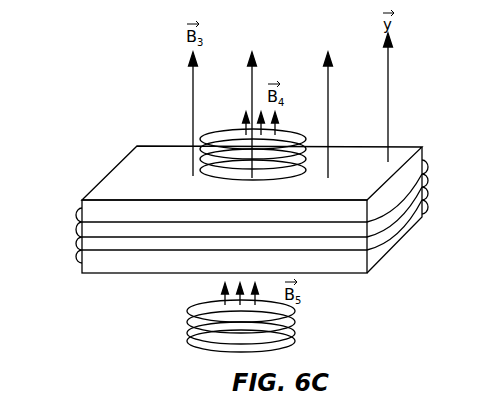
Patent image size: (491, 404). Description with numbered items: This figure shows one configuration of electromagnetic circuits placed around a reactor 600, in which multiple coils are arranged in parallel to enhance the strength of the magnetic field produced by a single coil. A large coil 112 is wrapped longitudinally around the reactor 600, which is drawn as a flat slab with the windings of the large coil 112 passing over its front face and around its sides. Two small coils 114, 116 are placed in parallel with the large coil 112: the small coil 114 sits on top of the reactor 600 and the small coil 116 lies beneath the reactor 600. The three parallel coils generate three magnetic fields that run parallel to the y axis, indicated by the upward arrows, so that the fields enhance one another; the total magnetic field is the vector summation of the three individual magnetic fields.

The large coil 112 is at (225, 211).
The small coil 114 is at (260, 144).
The small coil 116 is at (263, 326).
The reactor 600 is at (252, 209).